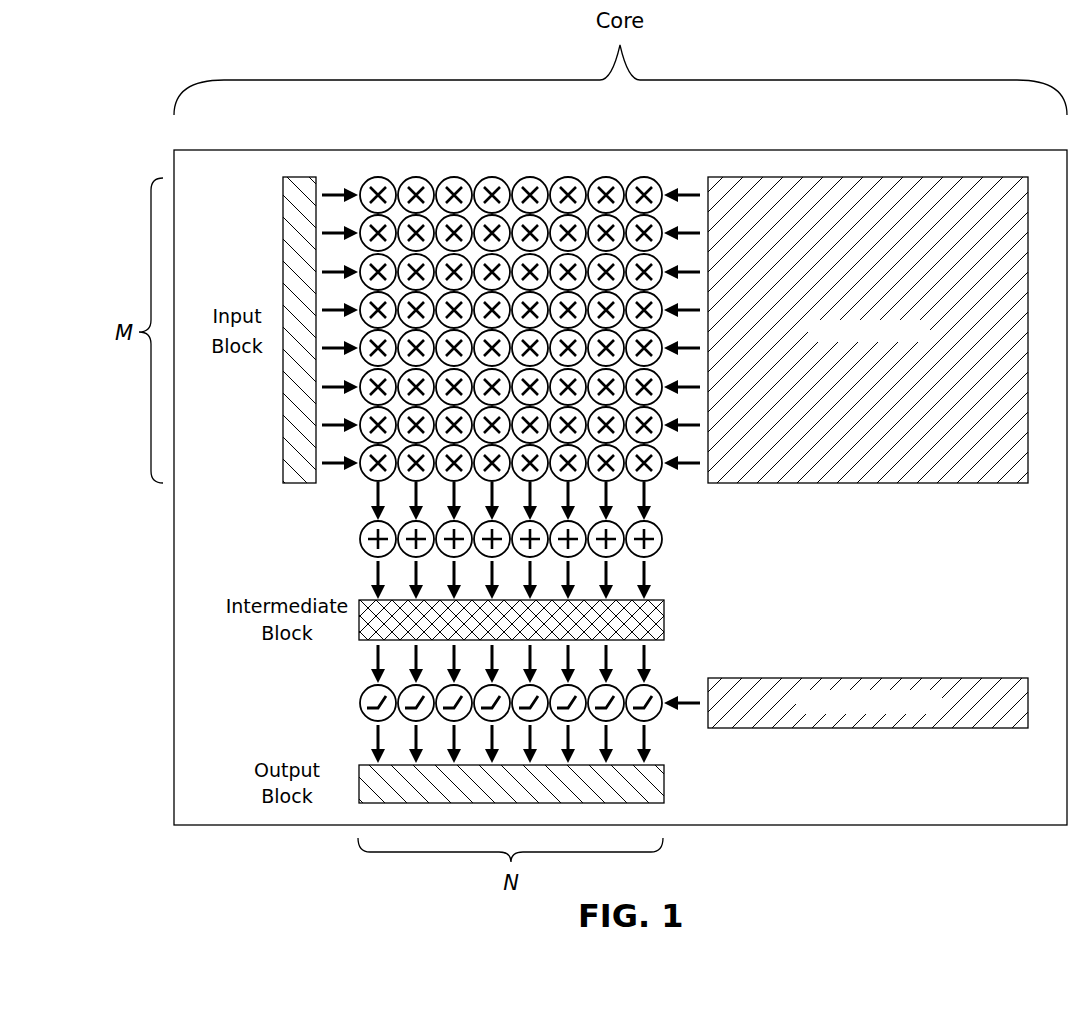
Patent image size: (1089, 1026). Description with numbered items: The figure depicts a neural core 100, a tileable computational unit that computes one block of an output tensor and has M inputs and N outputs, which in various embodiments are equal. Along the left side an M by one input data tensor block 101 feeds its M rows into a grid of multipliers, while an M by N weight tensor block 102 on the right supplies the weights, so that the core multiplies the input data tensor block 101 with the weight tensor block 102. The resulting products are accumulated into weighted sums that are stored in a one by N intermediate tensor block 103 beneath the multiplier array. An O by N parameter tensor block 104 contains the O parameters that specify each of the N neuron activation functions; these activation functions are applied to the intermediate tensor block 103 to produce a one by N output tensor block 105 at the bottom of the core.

The neural core 100 is at (110, 120).
The input data tensor block 101 is at (300, 177).
The weight tensor block 102 is at (872, 177).
The intermediate tensor block 103 is at (665, 622).
The parameter tensor block 104 is at (866, 680).
The output tensor block 105 is at (665, 785).